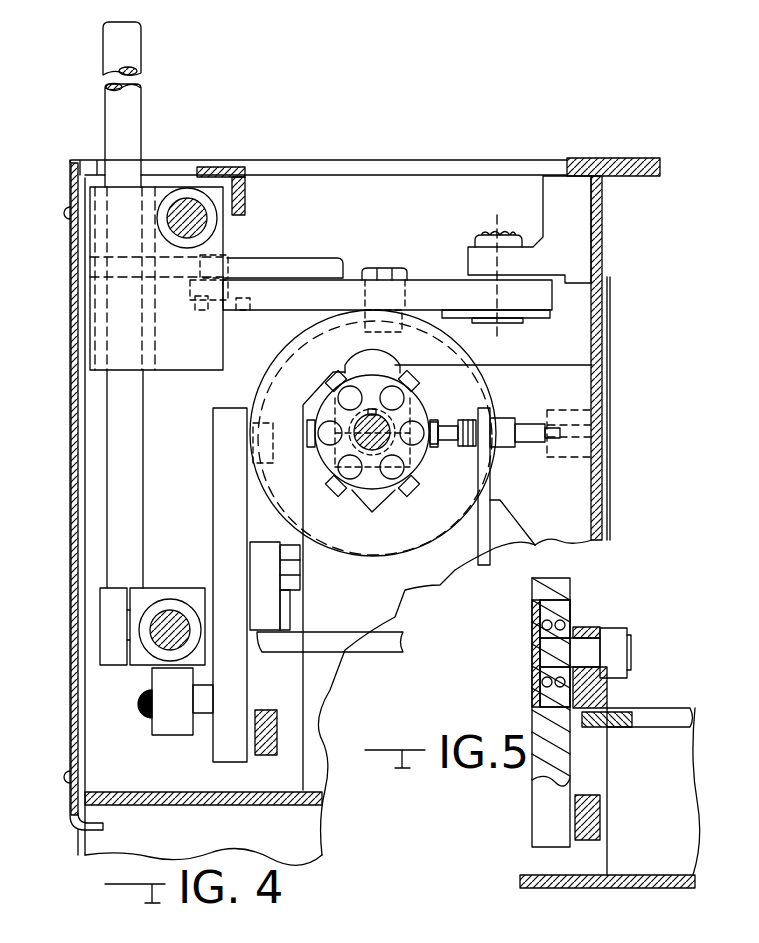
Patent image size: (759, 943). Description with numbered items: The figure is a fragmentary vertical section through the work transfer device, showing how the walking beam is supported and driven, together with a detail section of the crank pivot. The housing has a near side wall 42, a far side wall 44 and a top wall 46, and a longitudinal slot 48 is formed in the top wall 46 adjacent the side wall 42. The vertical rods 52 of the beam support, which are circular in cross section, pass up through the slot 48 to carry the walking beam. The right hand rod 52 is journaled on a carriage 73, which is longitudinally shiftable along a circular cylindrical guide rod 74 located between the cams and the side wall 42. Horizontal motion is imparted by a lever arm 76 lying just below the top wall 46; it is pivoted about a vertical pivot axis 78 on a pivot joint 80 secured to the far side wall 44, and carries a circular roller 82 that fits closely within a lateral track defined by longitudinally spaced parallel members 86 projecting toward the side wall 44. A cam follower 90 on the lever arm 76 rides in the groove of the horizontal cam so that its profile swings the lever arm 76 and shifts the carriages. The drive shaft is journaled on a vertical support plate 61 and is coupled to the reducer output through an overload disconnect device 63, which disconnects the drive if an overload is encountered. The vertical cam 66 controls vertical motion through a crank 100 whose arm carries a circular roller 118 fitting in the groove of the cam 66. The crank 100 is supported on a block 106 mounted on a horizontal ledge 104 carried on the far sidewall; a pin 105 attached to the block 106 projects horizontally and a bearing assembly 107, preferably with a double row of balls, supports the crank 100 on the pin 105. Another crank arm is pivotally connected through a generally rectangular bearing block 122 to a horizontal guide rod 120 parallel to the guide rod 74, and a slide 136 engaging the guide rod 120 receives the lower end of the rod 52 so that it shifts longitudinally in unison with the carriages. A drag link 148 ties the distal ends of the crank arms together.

In FIG. 4, the side wall 42 is at (70, 350).
In FIG. 4, the side wall 44 is at (602, 372).
In FIG. 4, the top wall 46 is at (590, 160).
In FIG. 4, the longitudinal slot 48 is at (163, 168).
In FIG. 4, the vertical rods 52 is at (145, 525).
In FIG. 4, the vertical support plate 61 is at (511, 456).
In FIG. 4, the overload disconnect device 63 is at (426, 410).
In FIG. 4, the barrel cam 66 is at (373, 550).
In FIG. 4, the carriage 73 is at (192, 372).
In FIG. 4, the guide rod 74 is at (195, 212).
In FIG. 4, the lever arm 76 is at (450, 282).
In FIG. 4, the pivot axis 78 is at (505, 240).
In FIG. 4, the pivot joint 80 is at (462, 223).
In FIG. 4, the roller 82 is at (240, 268).
In FIG. 4, the parallel members 86 is at (302, 265).
In FIG. 4, the cam follower 90 is at (470, 350).
In FIG. 4, the crank 100 is at (207, 465).
In FIG. 5, the crank 100 is at (524, 712).
In FIG. 4, the horizontal ledge 104 is at (368, 632).
In FIG. 5, the horizontal ledge 104 is at (658, 727).
In FIG. 5, the pin 105 is at (565, 648).
In FIG. 4, the block 106 is at (283, 622).
In FIG. 5, the block 106 is at (605, 625).
In FIG. 5, the bearing assembly 107 is at (560, 608).
In FIG. 4, the roller 118 is at (361, 438).
In FIG. 4, the guide rod 120 is at (172, 630).
In FIG. 4, the bearing block 122 is at (138, 748).
In FIG. 4, the slide 136 is at (152, 590).
In FIG. 4, the drag link 148 is at (282, 730).
In FIG. 5, the drag link 148 is at (600, 822).